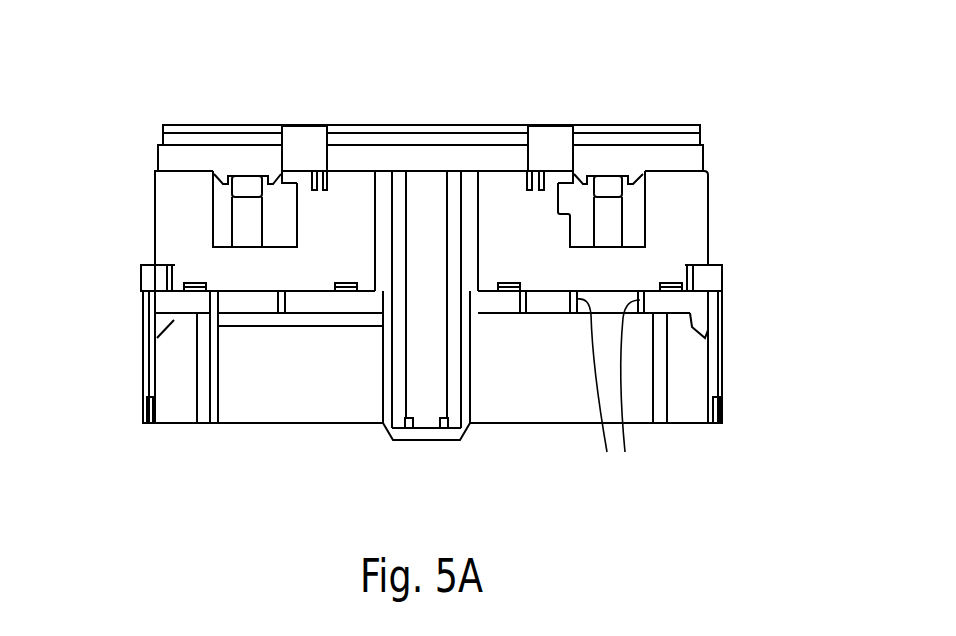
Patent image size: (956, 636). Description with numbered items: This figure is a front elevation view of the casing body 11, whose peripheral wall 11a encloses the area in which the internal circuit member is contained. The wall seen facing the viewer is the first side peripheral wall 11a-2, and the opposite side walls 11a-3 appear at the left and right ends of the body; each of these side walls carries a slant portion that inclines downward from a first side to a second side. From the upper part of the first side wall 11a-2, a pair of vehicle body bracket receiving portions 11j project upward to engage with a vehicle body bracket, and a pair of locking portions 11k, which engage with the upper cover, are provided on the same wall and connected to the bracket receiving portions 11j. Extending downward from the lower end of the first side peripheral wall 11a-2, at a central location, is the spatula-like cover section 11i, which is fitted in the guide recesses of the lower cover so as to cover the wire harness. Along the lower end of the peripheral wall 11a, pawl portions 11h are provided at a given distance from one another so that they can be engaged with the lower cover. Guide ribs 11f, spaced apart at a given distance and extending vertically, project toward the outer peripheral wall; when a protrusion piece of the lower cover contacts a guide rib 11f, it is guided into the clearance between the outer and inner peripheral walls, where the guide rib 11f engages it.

The casing body 11 is at (137, 67).
The locking portion 11k is at (307, 142).
The vehicle body bracket receiving portion 11j is at (223, 197).
The cover section 11i is at (428, 402).
The first side peripheral wall 11a-2 is at (193, 257).
The side wall 11a-3 is at (155, 232).
The pawl portion 11h is at (193, 292).
The peripheral wall 11a is at (548, 248).
The guide rib 11f is at (608, 402).